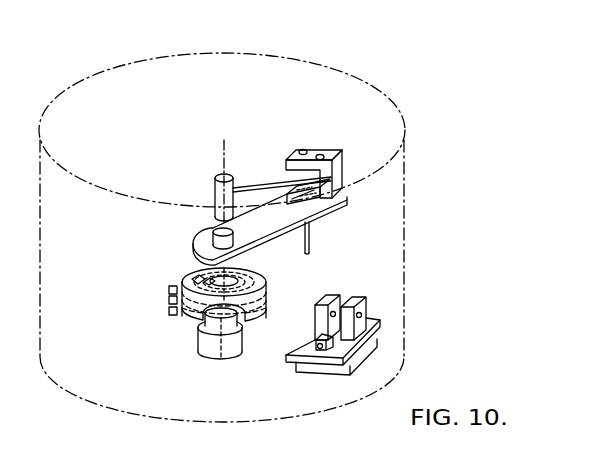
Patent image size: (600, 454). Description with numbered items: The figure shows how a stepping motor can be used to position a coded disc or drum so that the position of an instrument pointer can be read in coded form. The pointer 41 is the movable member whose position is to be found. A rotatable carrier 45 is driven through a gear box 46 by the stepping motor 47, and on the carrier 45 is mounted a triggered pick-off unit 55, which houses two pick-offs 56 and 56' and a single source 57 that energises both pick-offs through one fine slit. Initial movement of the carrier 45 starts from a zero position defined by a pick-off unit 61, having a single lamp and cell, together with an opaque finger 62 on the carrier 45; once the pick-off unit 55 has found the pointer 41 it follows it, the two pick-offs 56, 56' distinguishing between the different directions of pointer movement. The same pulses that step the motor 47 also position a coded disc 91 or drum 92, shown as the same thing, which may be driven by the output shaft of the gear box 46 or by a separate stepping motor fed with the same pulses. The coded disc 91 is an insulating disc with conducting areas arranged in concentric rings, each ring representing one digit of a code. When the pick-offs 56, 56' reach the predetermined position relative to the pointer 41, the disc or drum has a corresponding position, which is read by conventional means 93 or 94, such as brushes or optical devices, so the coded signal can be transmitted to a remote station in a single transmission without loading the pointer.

The pointer 41 is at (262, 183).
The rotatable carrier 45 is at (266, 228).
The gear box 46 is at (243, 335).
The stepping motor 47 is at (223, 356).
The triggered pick-off unit 55 is at (339, 160).
The pick-off 56 is at (292, 131).
The pick-off 56' is at (341, 137).
The source 57 is at (328, 206).
The pick-off unit 61 is at (356, 348).
The opaque finger 62 is at (311, 238).
The coded disc 91 is at (222, 281).
The drum 92 is at (187, 320).
The reading means 93 is at (206, 283).
The reading means 94 is at (168, 290).